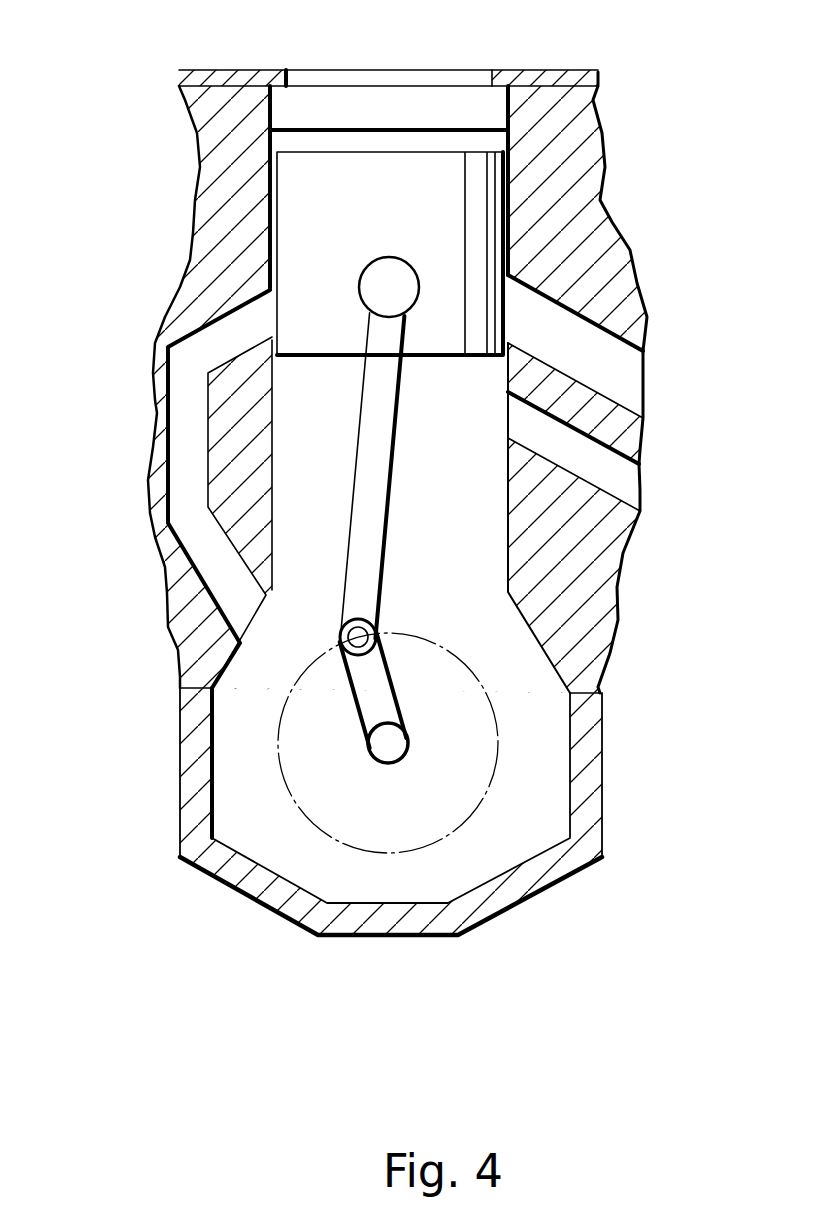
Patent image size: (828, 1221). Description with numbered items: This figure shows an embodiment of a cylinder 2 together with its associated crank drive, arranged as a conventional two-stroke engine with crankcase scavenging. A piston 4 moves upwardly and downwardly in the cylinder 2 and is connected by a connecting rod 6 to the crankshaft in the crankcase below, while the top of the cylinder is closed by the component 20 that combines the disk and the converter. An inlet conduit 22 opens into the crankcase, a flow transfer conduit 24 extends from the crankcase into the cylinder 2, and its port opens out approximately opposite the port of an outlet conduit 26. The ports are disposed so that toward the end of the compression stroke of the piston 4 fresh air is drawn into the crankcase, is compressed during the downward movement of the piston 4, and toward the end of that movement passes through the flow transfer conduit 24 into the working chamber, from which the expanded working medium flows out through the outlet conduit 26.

The cylinder 2 is at (277, 208).
The piston 4 is at (307, 257).
The connecting rod 6 is at (368, 523).
The component 20 is at (420, 98).
The inlet conduit 22 is at (615, 477).
The flow transfer conduit 24 is at (192, 465).
The outlet conduit 26 is at (623, 378).